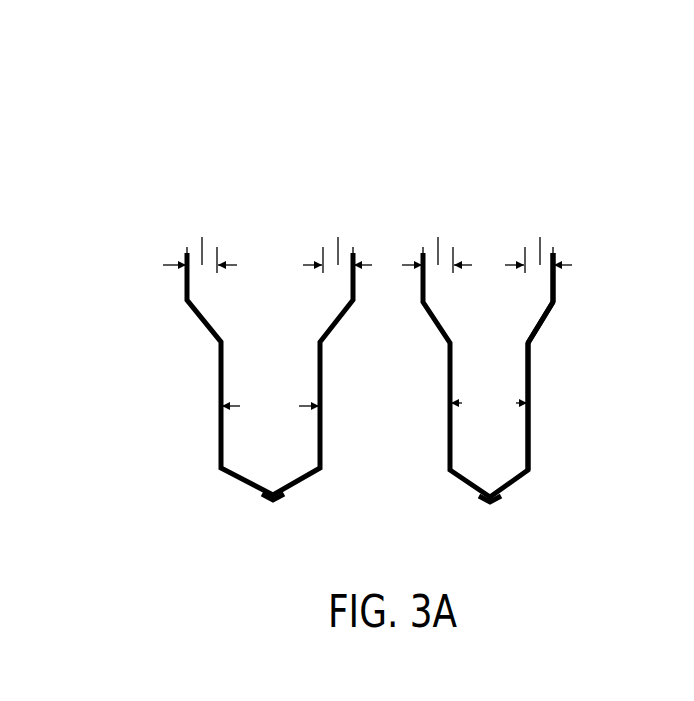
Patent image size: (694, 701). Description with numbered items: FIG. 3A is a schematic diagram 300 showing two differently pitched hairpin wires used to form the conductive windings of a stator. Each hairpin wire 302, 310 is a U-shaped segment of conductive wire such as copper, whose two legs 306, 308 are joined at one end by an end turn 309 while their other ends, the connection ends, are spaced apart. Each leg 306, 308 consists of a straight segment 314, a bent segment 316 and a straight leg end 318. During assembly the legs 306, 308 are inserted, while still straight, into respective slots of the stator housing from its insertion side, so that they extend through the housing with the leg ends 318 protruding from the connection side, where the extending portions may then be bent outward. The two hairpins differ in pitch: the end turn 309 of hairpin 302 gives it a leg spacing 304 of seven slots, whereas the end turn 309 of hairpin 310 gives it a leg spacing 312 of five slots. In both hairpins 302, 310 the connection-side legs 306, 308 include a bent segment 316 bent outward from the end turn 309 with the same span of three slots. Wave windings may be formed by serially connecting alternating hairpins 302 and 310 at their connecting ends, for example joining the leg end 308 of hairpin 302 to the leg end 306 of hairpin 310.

The slot configuration diagram 300 is at (300, 61).
The hairpin wire 302 is at (202, 402).
The seven-slot span 304 is at (288, 386).
The leg 306 is at (199, 199).
The leg 308 is at (337, 199).
The end turn 309 is at (273, 497).
The hairpin wire 310 is at (543, 439).
The five-slot span 312 is at (508, 384).
The straight segment 314 is at (529, 380).
The bent segment 316 is at (536, 330).
The straight leg end 318 is at (554, 283).